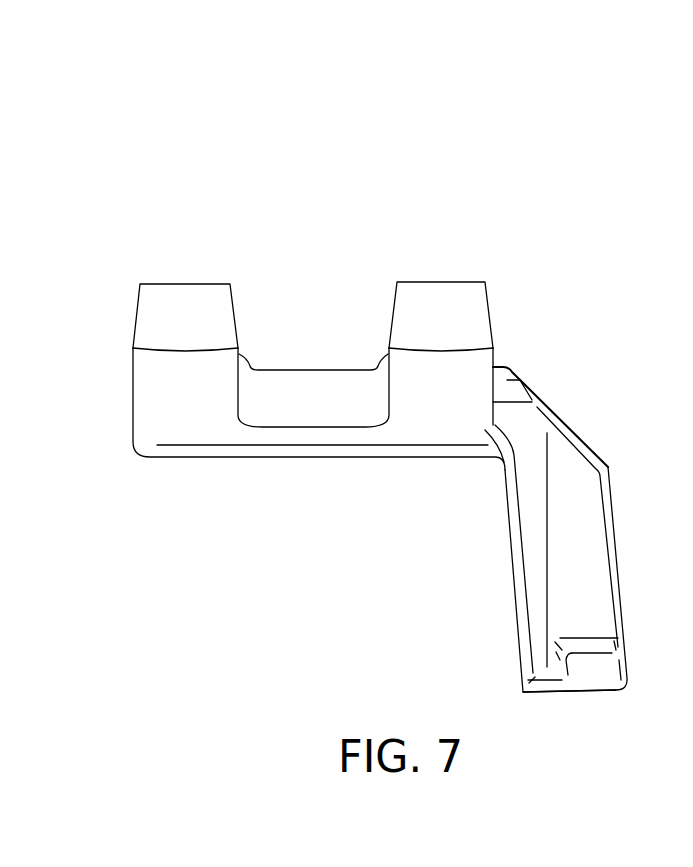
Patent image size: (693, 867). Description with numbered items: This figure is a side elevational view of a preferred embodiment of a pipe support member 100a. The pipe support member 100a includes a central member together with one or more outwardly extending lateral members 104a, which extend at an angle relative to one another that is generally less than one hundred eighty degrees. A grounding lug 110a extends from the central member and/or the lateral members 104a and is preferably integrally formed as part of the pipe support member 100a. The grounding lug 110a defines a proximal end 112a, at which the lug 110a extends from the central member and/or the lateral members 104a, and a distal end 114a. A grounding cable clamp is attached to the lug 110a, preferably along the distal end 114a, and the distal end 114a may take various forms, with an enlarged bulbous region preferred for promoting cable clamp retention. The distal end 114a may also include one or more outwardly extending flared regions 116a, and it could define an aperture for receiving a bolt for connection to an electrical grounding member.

The pipe support member 100a is at (523, 118).
The lateral members 104a is at (137, 305).
The grounding lug 110a is at (588, 538).
The proximal end 112a is at (505, 418).
The distal end 114a is at (585, 692).
The flared regions 116a is at (590, 667).